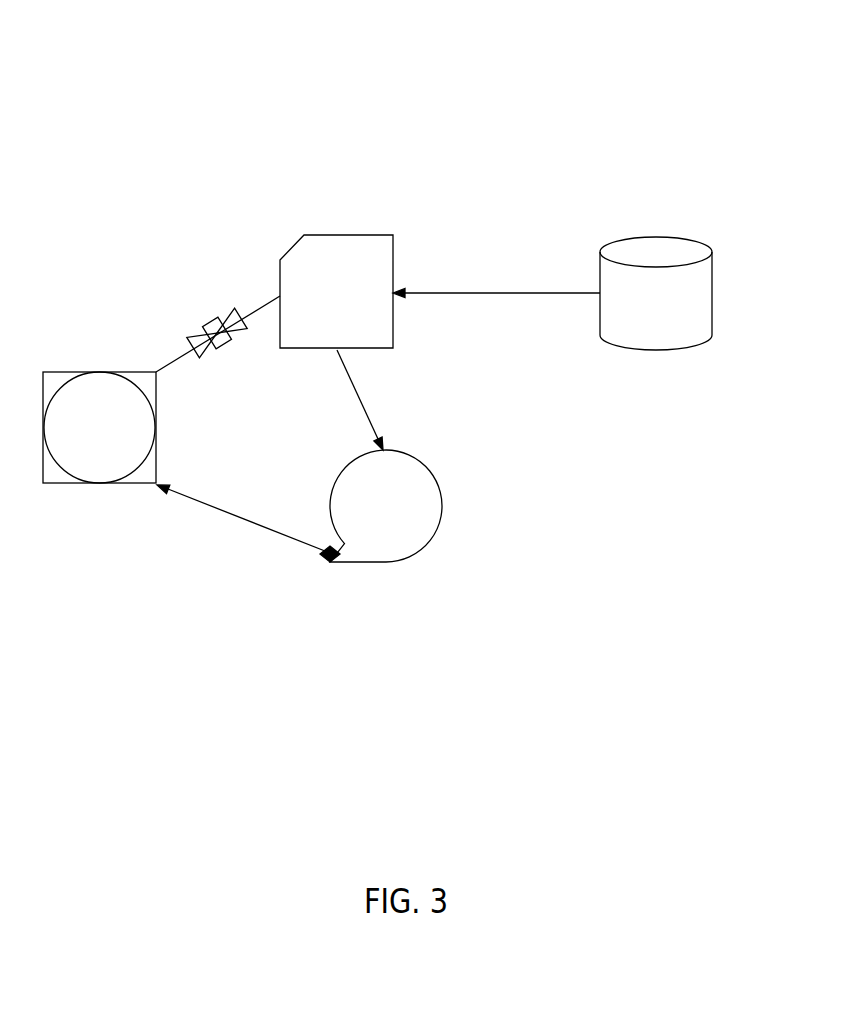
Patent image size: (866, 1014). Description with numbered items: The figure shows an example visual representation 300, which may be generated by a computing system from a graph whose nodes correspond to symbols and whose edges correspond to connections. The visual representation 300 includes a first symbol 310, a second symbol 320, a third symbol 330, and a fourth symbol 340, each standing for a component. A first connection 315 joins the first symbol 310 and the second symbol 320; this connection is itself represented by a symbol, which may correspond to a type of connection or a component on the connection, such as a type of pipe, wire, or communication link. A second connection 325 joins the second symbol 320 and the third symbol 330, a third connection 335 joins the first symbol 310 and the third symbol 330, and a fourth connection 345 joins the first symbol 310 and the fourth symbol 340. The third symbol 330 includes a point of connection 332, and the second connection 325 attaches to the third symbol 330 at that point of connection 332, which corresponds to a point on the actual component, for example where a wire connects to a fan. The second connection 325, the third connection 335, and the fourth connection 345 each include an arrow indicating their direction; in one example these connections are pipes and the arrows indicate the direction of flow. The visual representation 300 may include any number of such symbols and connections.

The visual representation 300 is at (744, 36).
The first symbol 310 is at (336, 291).
The first connection 315 is at (210, 326).
The second symbol 320 is at (99, 427).
The second connection 325 is at (218, 510).
The third symbol 330 is at (386, 506).
The point of connection 332 is at (327, 567).
The third connection 335 is at (363, 403).
The fourth symbol 340 is at (656, 293).
The fourth connection 345 is at (518, 292).